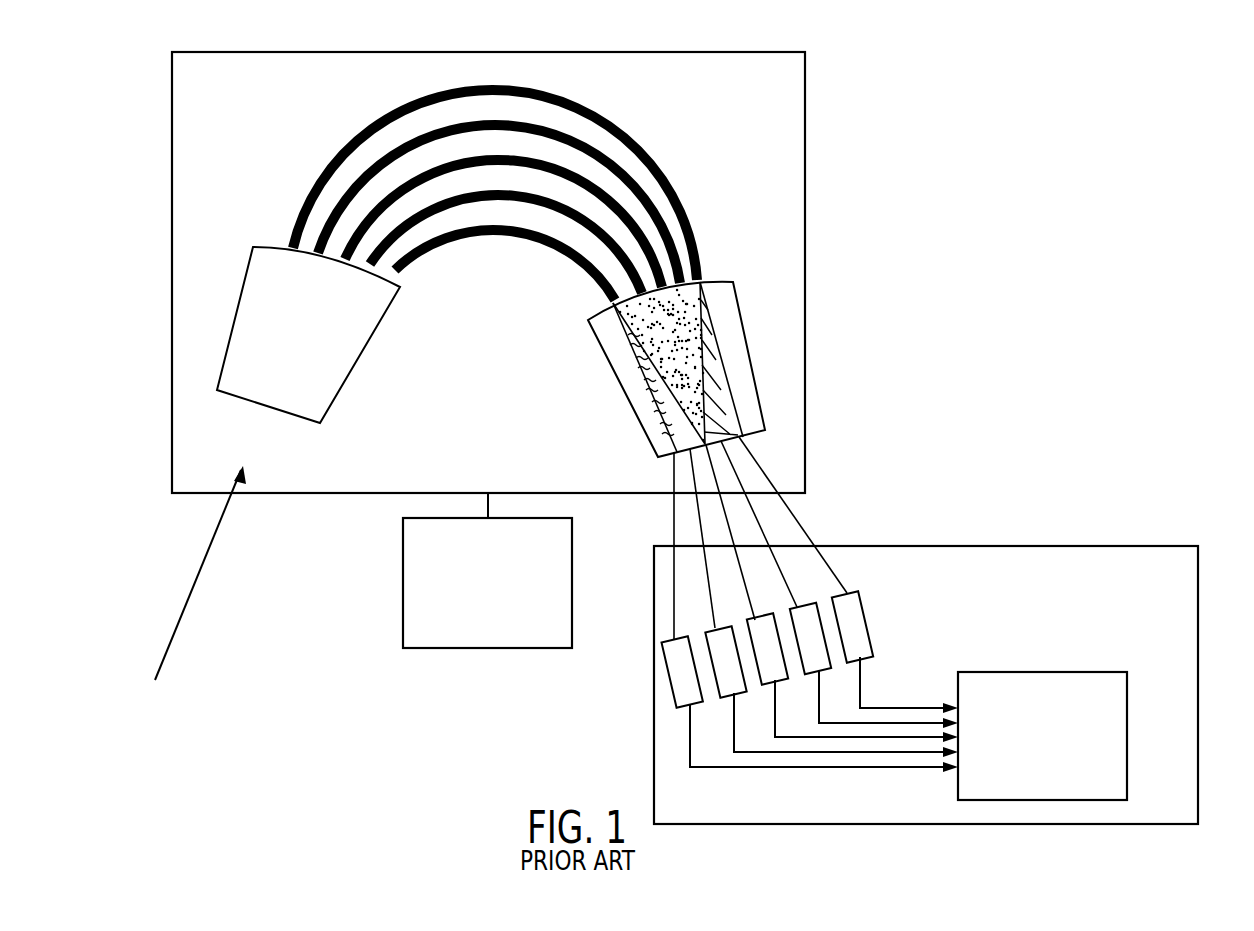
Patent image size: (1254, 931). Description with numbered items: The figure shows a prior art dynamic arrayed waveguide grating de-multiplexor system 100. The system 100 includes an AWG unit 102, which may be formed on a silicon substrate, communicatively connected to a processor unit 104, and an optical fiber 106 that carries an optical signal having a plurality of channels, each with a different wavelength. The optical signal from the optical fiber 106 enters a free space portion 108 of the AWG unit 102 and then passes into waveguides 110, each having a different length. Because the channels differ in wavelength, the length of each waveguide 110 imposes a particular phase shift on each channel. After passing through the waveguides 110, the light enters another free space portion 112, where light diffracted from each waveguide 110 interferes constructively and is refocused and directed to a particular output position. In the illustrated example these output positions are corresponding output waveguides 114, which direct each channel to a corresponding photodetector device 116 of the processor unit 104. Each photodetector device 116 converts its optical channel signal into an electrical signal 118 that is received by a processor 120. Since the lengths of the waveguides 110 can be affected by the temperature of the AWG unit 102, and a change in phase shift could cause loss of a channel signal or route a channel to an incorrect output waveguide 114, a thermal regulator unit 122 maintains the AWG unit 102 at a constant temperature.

The dynamic arrayed waveguide grating de-multiplexor system 100 is at (957, 118).
The AWG unit 102 is at (805, 241).
The processor unit 104 is at (1050, 546).
The optical fiber 106 is at (196, 576).
The free space portion 108 is at (233, 318).
The waveguides 110 is at (624, 132).
The free space portion 112 is at (748, 350).
The output waveguides 114 is at (774, 609).
The photodetector device 116 is at (862, 612).
The electrical signal 118 is at (908, 706).
The processor 120 is at (1044, 672).
The thermal regulator unit 122 is at (403, 578).